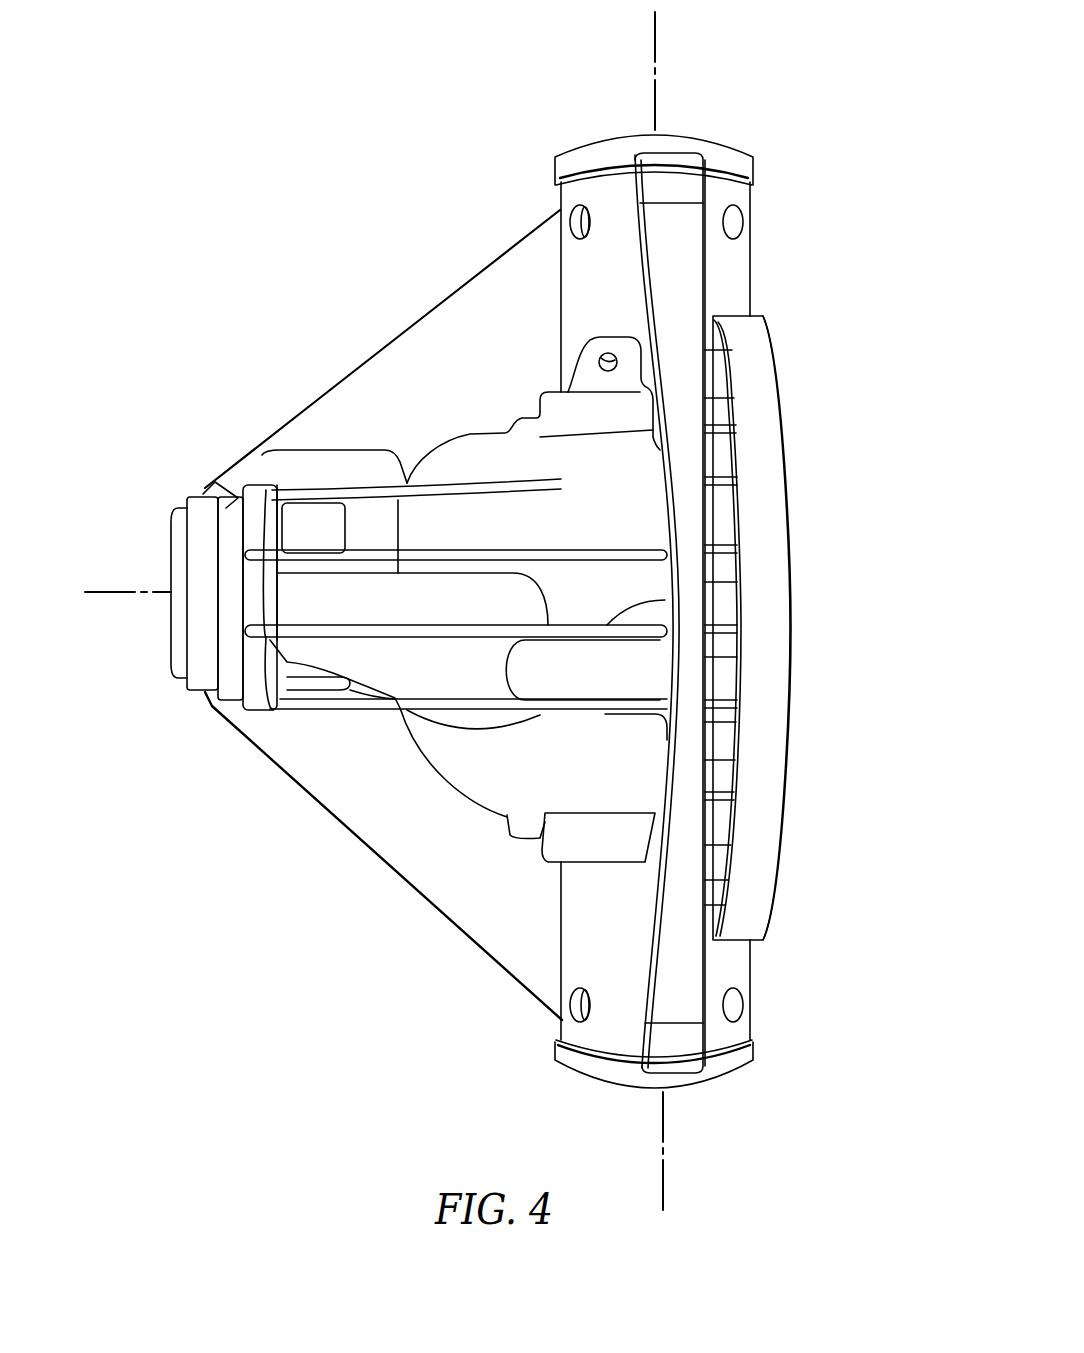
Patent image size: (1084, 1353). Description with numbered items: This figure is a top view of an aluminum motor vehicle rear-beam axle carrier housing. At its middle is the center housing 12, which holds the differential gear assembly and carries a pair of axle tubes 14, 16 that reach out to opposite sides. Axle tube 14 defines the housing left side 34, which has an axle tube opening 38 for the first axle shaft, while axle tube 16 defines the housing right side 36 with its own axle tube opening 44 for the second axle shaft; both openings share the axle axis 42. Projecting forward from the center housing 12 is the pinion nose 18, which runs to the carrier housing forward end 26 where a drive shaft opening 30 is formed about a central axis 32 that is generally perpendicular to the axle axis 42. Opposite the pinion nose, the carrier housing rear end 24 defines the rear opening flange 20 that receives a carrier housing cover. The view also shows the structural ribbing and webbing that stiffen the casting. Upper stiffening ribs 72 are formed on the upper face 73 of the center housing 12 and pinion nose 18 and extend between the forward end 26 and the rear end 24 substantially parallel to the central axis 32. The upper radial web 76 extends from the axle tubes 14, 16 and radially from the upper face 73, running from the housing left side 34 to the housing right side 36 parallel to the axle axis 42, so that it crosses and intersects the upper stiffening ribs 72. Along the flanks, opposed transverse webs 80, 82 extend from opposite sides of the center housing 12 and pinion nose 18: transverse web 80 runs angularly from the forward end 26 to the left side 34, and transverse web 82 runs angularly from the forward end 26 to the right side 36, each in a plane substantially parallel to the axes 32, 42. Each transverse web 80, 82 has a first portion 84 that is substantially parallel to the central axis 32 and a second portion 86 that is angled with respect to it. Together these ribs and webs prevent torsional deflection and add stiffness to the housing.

The center housing 12 is at (615, 677).
The axle tube 14 is at (567, 975).
The axle tube 16 is at (578, 263).
The pinion nose 18 is at (253, 498).
The rear opening flange 20 is at (790, 607).
The carrier housing rear end 24 is at (800, 648).
The carrier housing forward end 26 is at (178, 502).
The drive shaft opening 30 is at (168, 650).
The central axis 32 is at (130, 592).
The housing left side 34 is at (770, 1068).
The housing right side 36 is at (763, 150).
The axle tube opening 38 is at (700, 1096).
The axle axis 42 is at (654, 50).
The axle tube opening 44 is at (708, 130).
The upper stiffening ribs 72 is at (452, 706).
The upper face 73 is at (620, 590).
The upper radial web 76 is at (683, 337).
The transverse web 80 is at (433, 878).
The transverse web 82 is at (400, 372).
The first portion 84 is at (307, 422).
The second portion 86 is at (508, 303).